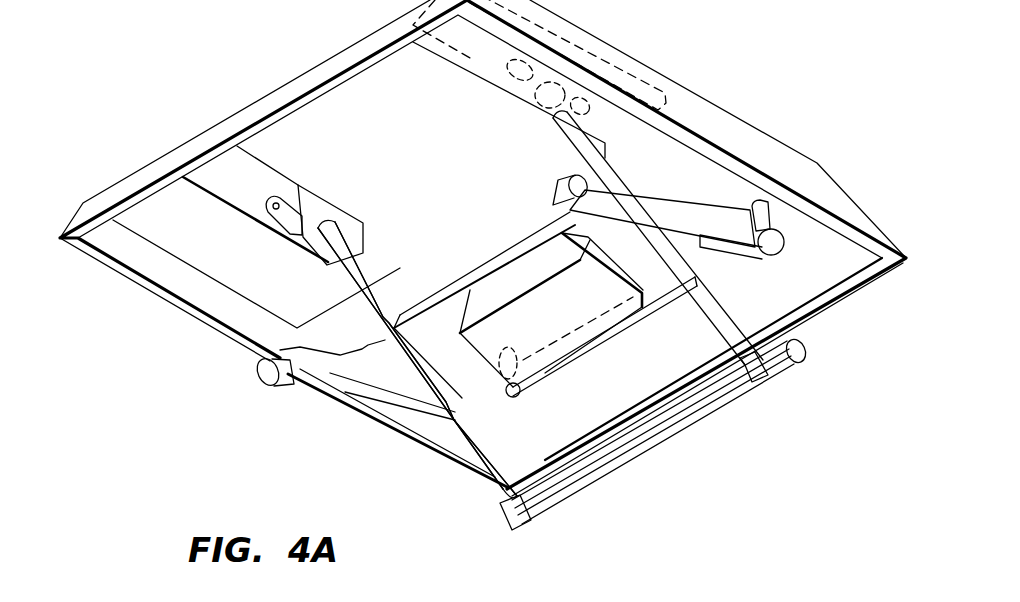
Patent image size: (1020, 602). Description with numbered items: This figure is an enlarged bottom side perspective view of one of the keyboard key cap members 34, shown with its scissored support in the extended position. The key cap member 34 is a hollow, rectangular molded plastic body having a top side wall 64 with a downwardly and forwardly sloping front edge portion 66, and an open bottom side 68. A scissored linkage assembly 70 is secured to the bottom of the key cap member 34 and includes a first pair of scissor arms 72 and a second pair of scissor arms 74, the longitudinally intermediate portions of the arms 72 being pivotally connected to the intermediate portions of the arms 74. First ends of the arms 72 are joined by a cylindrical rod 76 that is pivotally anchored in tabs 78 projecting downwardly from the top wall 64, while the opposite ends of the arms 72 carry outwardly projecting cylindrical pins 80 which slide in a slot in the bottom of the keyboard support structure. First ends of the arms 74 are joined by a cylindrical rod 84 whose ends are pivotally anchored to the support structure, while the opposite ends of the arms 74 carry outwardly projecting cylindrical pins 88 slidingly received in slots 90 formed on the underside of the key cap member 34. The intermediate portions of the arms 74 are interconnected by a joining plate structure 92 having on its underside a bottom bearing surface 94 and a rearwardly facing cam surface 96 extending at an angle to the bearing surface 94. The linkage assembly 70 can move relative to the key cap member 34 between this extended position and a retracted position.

The key cap member 34 is at (243, 102).
The top side wall 64 is at (434, 187).
The front edge portion 66 is at (840, 278).
The open bottom side 68 is at (808, 338).
The scissored linkage assembly 70 is at (428, 420).
The first pair of scissor arms 72 is at (325, 363).
The second pair of scissor arms 74 is at (490, 443).
The cylindrical rod 76 is at (603, 343).
The tabs 78 is at (504, 352).
The cylindrical pins 80 is at (262, 386).
The cylindrical rod 84 is at (630, 463).
The cylindrical pins 88 is at (617, 56).
The slots 90 is at (268, 200).
The joining plate structure 92 is at (510, 242).
The bottom bearing surface 94 is at (587, 311).
The cam surface 96 is at (488, 293).